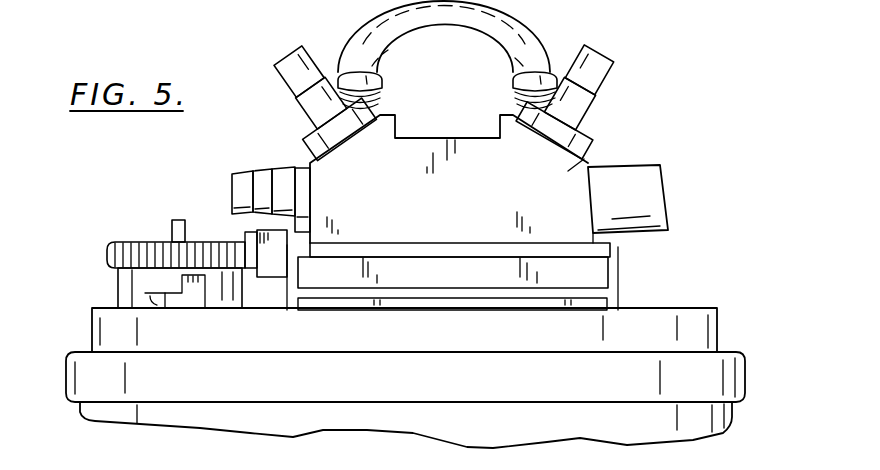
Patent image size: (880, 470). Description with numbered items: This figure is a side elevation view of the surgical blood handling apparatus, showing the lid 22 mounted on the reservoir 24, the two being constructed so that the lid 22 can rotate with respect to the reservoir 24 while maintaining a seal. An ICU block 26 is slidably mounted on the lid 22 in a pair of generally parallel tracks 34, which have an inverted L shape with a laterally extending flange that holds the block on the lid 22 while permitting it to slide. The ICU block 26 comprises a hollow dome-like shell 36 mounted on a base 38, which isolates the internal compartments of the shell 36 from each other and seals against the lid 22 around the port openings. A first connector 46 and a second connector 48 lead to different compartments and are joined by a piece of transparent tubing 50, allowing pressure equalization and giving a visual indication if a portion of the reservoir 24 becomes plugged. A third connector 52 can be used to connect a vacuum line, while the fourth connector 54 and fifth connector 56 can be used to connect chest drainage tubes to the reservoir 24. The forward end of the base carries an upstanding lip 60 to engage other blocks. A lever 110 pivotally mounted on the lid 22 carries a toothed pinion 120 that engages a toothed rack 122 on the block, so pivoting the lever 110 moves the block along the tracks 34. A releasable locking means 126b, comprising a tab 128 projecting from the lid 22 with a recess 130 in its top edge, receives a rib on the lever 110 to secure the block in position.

The lid 22 is at (702, 331).
The reservoir 24 is at (722, 427).
The ICU block 26 is at (300, 159).
The tracks 34 is at (310, 228).
The shell 36 is at (583, 167).
The base 38 is at (597, 278).
The first connector 46 is at (382, 90).
The second connector 48 is at (518, 90).
The transparent tubing 50 is at (440, 20).
The third connector 52 is at (612, 66).
The fourth connector 54 is at (283, 61).
The fifth connector 56 is at (242, 180).
The upstanding lip 60 is at (565, 243).
The lever 110 is at (183, 220).
The toothed pinion 120 is at (118, 242).
The toothed rack 122 is at (272, 273).
The locking means 126b is at (157, 305).
The tab 128 is at (196, 302).
The recess 130 is at (174, 293).